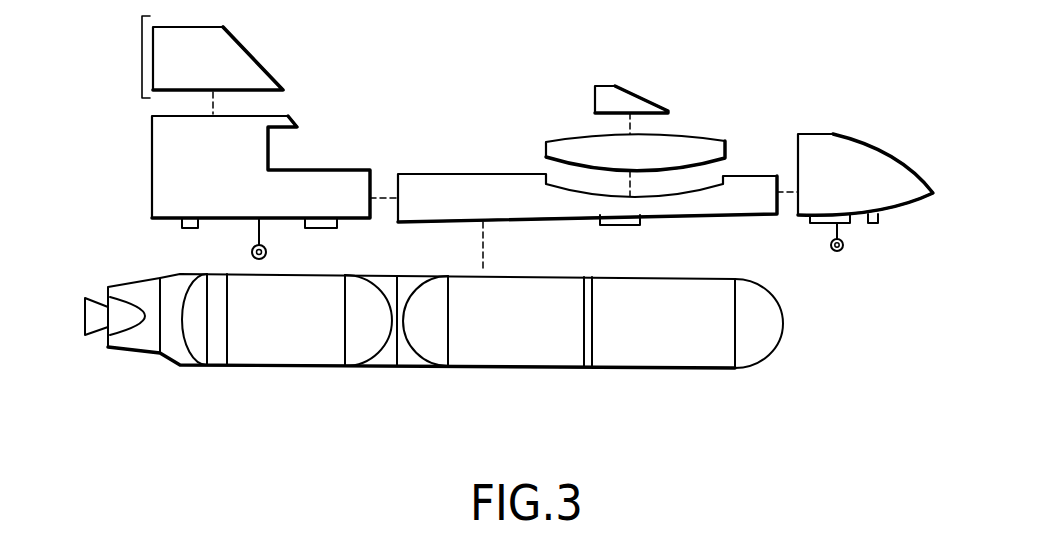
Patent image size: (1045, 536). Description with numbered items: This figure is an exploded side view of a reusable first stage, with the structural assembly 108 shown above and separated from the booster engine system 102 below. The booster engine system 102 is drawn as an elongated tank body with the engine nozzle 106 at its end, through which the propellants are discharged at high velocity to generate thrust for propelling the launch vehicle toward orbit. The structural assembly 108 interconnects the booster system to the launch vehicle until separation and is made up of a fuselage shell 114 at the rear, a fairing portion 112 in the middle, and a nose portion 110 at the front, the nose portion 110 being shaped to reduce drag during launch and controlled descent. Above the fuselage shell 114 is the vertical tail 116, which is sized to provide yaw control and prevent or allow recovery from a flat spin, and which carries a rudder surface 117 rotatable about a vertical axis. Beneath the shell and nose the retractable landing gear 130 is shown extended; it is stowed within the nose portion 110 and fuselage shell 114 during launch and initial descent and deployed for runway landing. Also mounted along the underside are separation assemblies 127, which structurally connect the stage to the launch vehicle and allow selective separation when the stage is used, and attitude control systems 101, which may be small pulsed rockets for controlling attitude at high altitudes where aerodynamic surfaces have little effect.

The attitude control systems 101 is at (177, 229).
The booster engine system 102 is at (481, 303).
The nozzle 106 is at (100, 298).
The structural assembly 108 is at (876, 127).
The nose portion 110 is at (912, 170).
The fairing portion 112 is at (750, 180).
The fuselage shell 114 is at (355, 170).
The vertical tail 116 is at (251, 55).
The rudder surface 117 is at (140, 53).
The separation assemblies 127 is at (337, 228).
The landing gear 130 is at (255, 238).